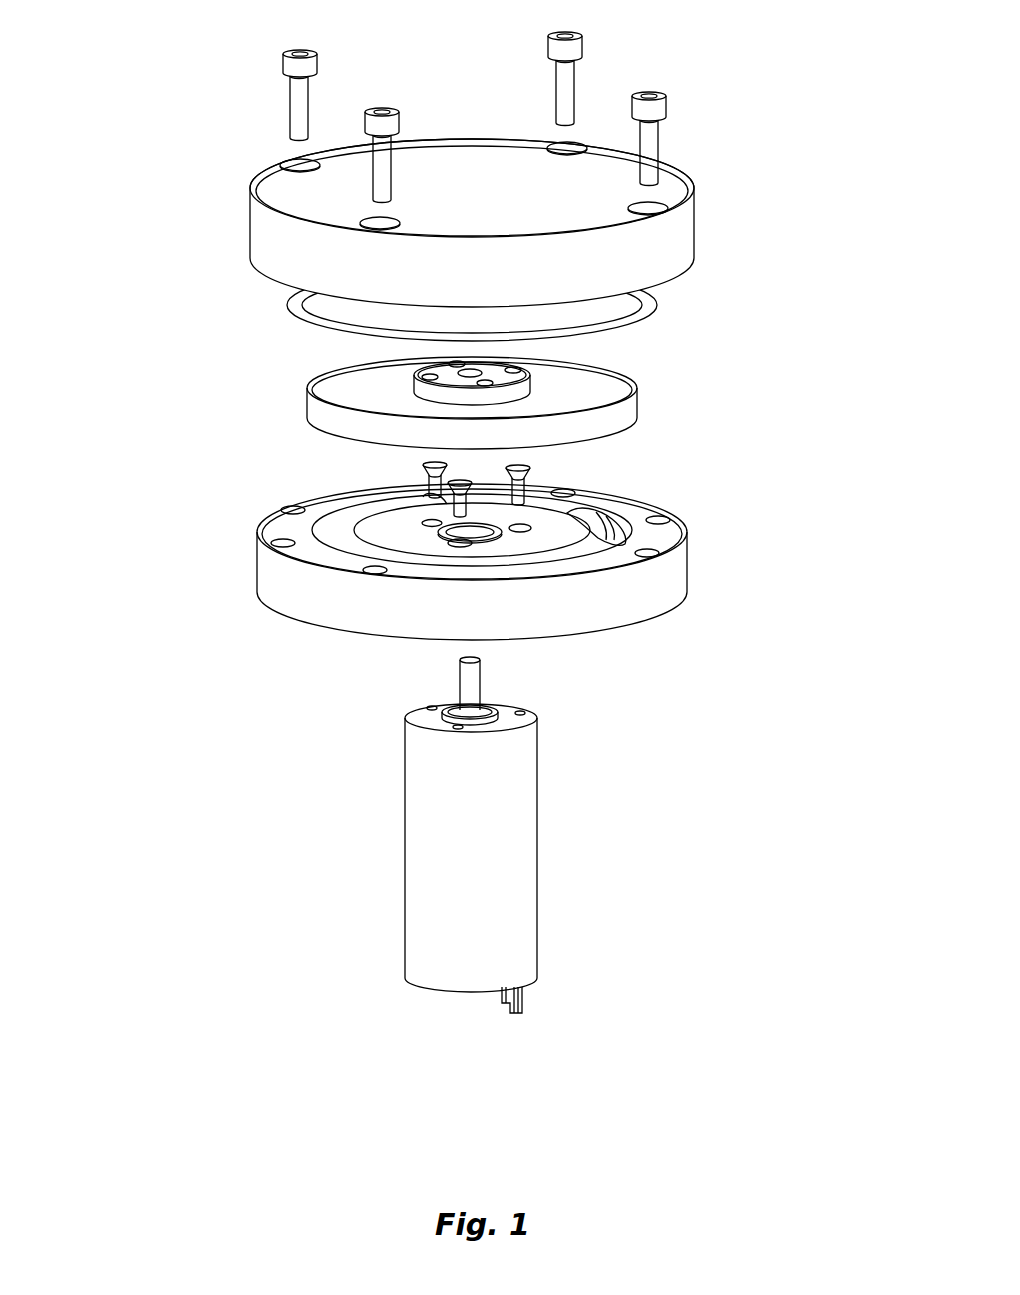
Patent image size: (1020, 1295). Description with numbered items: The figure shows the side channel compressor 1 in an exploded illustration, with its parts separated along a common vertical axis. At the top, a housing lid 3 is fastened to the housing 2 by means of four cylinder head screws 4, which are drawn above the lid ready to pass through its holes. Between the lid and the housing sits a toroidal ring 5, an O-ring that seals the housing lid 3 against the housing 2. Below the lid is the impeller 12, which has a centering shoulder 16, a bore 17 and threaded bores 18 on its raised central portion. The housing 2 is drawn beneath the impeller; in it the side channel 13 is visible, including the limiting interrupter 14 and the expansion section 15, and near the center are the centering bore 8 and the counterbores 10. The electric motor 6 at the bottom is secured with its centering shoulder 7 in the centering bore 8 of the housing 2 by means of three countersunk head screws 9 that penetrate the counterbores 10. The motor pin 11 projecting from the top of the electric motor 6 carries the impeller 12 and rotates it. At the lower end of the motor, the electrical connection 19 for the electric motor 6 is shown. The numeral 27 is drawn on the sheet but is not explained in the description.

The side channel compressor 1 is at (472, 1017).
The housing 2 is at (432, 608).
The housing lid 3 is at (322, 255).
The cylinder head screws 4 is at (298, 105).
The toroidal ring 5 is at (290, 287).
The electric motor 6 is at (465, 922).
The centering shoulder 7 is at (447, 715).
The centering bore 8 is at (477, 535).
The countersunk head screws 9 is at (423, 484).
The counterbores 10 is at (518, 530).
The motor pin 11 is at (468, 668).
The impeller 12 is at (345, 390).
The side channel 13 is at (337, 537).
The limiting interrupter 14 is at (540, 511).
The expansion section 15 is at (618, 522).
The centering shoulder 16 is at (420, 385).
The bore 17 is at (470, 372).
The threaded bores 18 is at (528, 370).
The electrical connection 19 is at (522, 998).
The annular groove 27 is at (257, 527).